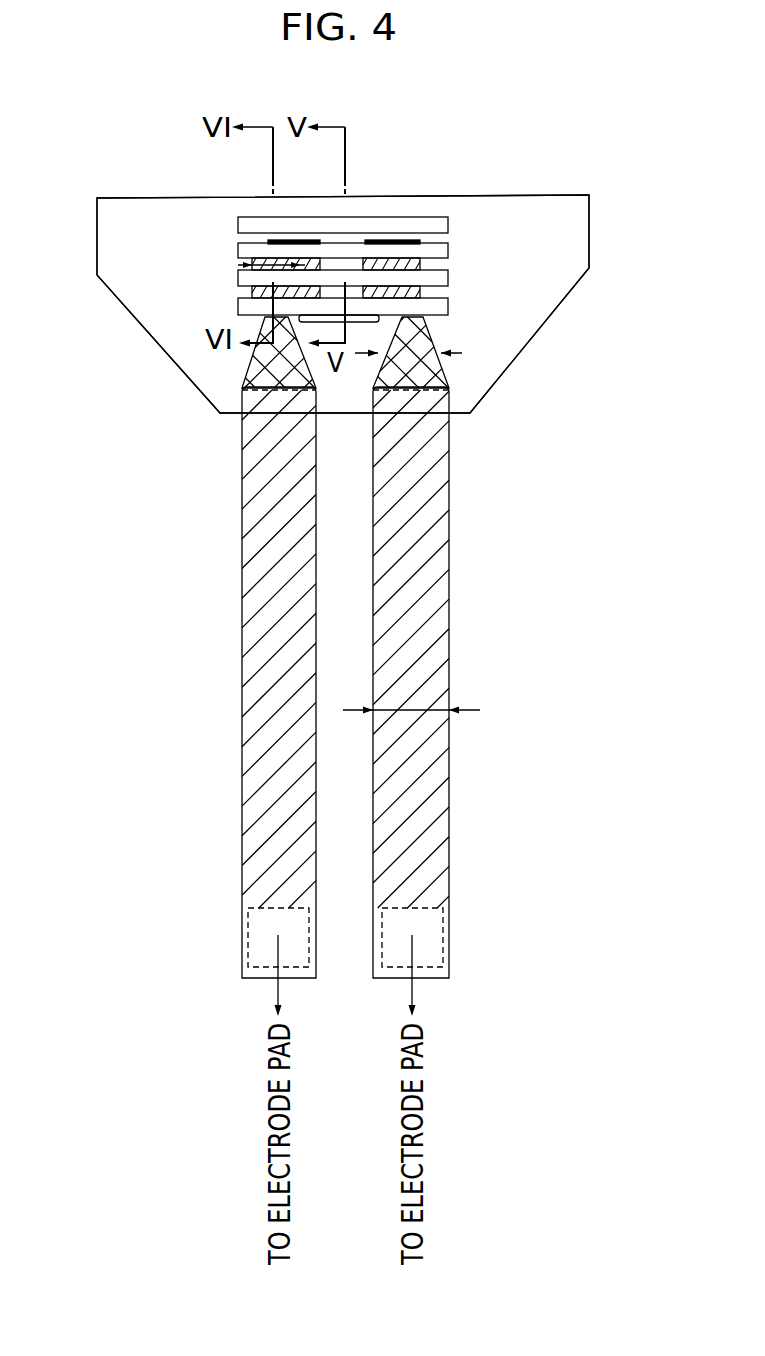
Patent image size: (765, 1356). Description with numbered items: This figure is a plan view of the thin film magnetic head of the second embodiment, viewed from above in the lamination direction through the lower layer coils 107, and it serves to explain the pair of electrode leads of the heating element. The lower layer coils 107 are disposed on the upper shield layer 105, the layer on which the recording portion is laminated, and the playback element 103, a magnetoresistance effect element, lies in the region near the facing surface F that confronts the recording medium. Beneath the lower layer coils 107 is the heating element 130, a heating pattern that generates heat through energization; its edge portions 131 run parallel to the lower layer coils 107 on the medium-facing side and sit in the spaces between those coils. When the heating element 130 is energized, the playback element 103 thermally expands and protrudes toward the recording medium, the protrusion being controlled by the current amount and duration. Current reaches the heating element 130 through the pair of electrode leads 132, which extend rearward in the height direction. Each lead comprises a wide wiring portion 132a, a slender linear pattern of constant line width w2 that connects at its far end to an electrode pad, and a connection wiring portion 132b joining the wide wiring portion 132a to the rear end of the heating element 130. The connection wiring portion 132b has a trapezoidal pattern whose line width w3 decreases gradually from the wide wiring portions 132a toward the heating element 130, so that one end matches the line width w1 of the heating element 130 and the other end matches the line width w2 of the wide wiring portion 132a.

The playback element 103 is at (349, 228).
The upper shield layer 105 is at (495, 208).
The facing surface F is at (570, 196).
The lower layer coils 107 is at (349, 266).
The heating element 130 is at (420, 293).
The edge portions 131 is at (305, 242).
The electrode leads 132 is at (350, 647).
The wide wiring portions 132a is at (254, 490).
The connection wiring portions 132b is at (250, 368).
The line width of the heating element w1 is at (265, 272).
The line width of the wide wiring portion w2 is at (417, 708).
The line width of the connection wiring portion w3 is at (437, 341).